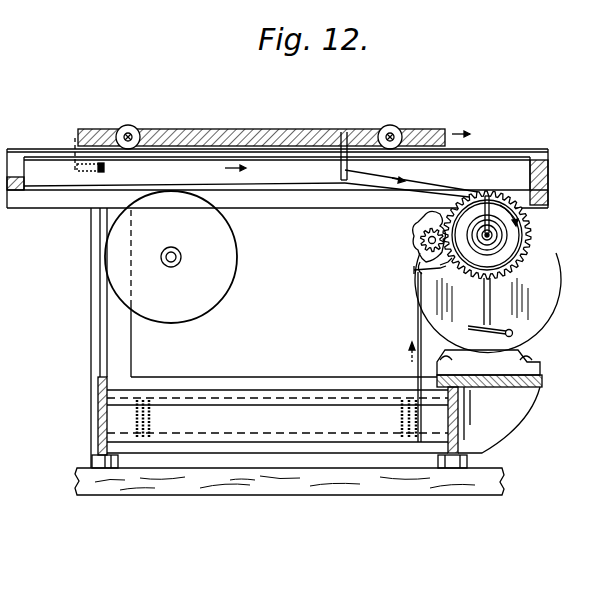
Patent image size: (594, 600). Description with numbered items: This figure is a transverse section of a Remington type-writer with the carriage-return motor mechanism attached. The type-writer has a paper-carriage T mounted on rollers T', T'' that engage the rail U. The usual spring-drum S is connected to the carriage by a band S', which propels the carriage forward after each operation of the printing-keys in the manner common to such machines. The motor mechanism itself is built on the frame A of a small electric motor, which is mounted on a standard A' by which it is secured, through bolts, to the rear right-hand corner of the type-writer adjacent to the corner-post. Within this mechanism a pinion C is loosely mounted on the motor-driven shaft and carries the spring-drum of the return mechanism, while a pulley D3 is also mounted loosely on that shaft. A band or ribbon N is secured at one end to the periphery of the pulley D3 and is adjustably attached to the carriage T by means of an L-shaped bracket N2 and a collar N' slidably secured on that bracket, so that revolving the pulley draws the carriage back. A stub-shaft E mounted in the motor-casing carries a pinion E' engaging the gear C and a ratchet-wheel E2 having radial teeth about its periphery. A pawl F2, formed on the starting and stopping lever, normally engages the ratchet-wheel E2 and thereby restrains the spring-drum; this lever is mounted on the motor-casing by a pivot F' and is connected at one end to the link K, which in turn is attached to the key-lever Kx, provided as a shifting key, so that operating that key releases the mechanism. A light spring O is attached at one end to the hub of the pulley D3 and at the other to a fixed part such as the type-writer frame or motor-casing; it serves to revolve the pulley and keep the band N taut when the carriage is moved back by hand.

The paper-carriage T is at (261, 123).
The rollers T' is at (138, 123).
The rollers T'' is at (399, 121).
The rail U is at (492, 148).
The band or ribbon N is at (277, 177).
The L-shaped bracket N2 is at (77, 169).
The collar N' is at (74, 189).
The band S' is at (304, 182).
The spring-drum S is at (179, 257).
The link K is at (410, 336).
The key-lever Kx is at (420, 422).
The standard A' is at (502, 401).
The frame of electric motor A is at (493, 303).
The pinion C is at (528, 222).
The pulley D3 is at (492, 250).
The light spring O is at (502, 235).
The pin H is at (484, 212).
The stub-shaft E is at (414, 228).
The pinion E' is at (402, 236).
The ratchet-wheel E2 is at (357, 258).
The pawl F2 is at (348, 278).
The pivot F' is at (402, 281).